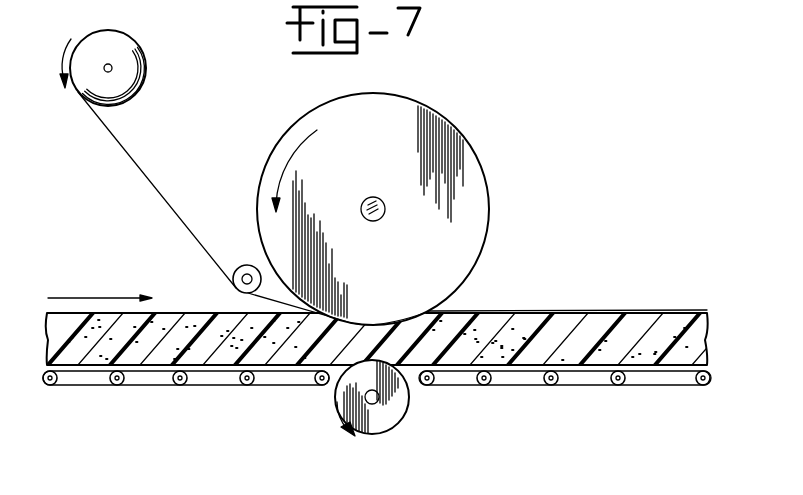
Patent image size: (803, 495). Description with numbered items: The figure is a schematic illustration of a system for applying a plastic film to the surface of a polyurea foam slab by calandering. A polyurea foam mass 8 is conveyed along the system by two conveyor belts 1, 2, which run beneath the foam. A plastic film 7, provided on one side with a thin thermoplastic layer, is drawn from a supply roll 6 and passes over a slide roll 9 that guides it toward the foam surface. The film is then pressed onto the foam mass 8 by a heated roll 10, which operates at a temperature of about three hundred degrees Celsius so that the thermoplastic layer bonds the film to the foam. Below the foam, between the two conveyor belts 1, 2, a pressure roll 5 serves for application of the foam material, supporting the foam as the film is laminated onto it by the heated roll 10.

The conveyor belt 1 is at (152, 386).
The conveyor belt 2 is at (576, 387).
The pressure roll 5 is at (392, 427).
The supply roll 6 is at (146, 68).
The plastic film 7 is at (161, 197).
The polyurea foam mass 8 is at (532, 327).
The slide roll 9 is at (233, 282).
The heated roll 10 is at (464, 164).